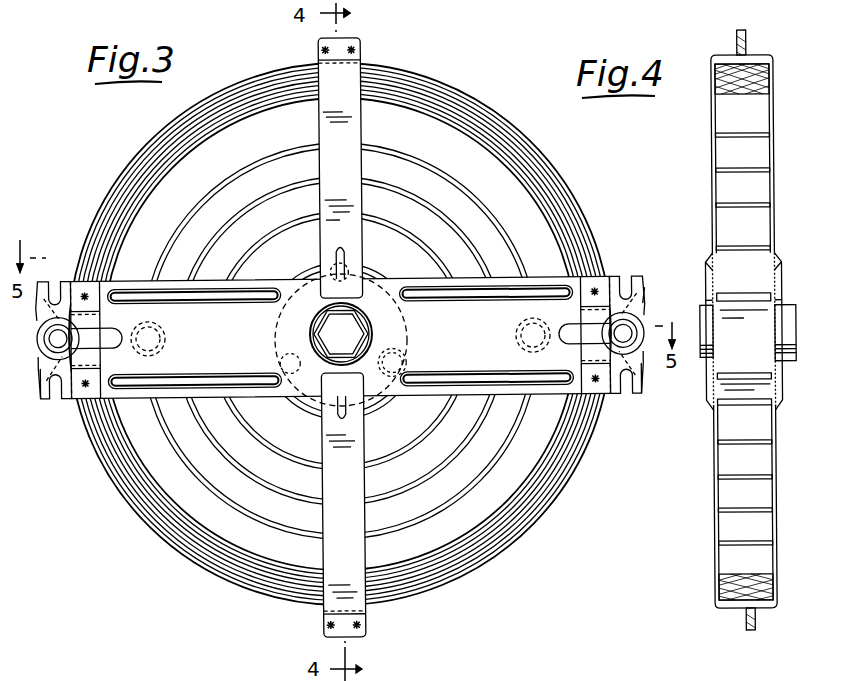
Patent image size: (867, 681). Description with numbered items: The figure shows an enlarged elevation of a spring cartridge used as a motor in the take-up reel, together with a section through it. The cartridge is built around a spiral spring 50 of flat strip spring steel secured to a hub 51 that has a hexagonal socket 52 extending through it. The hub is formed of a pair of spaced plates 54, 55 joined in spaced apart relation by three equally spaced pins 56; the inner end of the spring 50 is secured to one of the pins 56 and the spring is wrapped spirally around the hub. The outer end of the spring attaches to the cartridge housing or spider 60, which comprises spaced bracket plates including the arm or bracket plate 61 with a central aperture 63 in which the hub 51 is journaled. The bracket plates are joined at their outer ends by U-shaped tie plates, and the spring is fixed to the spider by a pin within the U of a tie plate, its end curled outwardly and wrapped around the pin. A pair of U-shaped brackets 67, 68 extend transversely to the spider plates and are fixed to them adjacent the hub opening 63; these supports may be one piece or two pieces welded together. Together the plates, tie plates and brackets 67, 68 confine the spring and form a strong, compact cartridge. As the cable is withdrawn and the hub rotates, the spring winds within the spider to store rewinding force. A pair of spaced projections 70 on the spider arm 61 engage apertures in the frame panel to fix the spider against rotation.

In FIG. 3, the spiral spring 50 is at (489, 214).
In FIG. 4, the spiral spring 50 is at (731, 158).
In FIG. 3, the hub 51 is at (312, 318).
In FIG. 4, the hub 51 is at (706, 356).
In FIG. 3, the hexagonal socket 52 is at (318, 344).
In FIG. 3, the spaced plate 54 is at (322, 272).
In FIG. 4, the spaced plate 54 is at (710, 253).
In FIG. 4, the spaced plate 55 is at (780, 256).
In FIG. 3, the pins 56 is at (380, 266).
In FIG. 4, the pins 56 is at (742, 338).
In FIG. 3, the spider 60 is at (622, 332).
In FIG. 3, the bracket plate 61 is at (612, 277).
In FIG. 3, the central aperture 63 is at (366, 326).
In FIG. 3, the U-shaped bracket 67 is at (353, 76).
In FIG. 4, the U-shaped bracket 67 is at (740, 30).
In FIG. 3, the U-shaped bracket 68 is at (362, 600).
In FIG. 4, the U-shaped bracket 68 is at (744, 622).
In FIG. 3, the projections 70 is at (165, 345).
In FIG. 4, the projections 70 is at (794, 362).